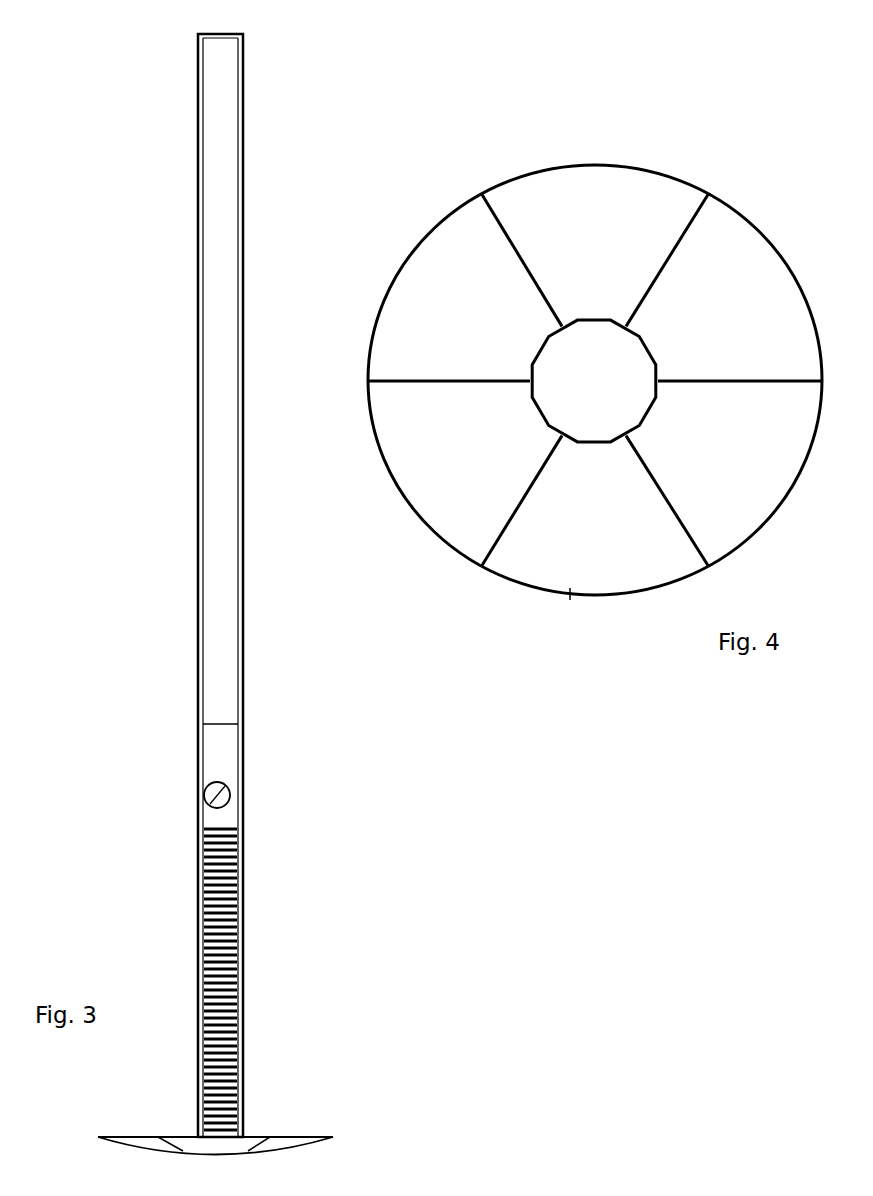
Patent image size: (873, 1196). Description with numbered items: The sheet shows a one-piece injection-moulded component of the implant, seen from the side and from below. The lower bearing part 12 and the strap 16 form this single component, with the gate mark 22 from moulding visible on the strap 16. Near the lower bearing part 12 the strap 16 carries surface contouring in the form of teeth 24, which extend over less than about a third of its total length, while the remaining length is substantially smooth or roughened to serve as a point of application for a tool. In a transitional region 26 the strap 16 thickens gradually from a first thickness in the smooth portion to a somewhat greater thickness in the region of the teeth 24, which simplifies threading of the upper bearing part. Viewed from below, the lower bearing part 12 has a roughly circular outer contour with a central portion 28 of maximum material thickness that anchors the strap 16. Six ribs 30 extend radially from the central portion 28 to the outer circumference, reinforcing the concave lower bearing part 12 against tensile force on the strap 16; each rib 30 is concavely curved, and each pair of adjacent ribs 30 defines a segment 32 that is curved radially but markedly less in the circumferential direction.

In FIG. 3, the lower bearing part 12 is at (352, 1102).
In FIG. 4, the lower bearing part 12 is at (428, 142).
In FIG. 3, the strap 16 is at (225, 683).
In FIG. 3, the gate mark 22 is at (222, 787).
In FIG. 3, the teeth 24 is at (225, 985).
In FIG. 3, the transitional region 26 is at (215, 745).
In FIG. 4, the central portion 28 is at (578, 388).
In FIG. 4, the ribs 30 is at (675, 238).
In FIG. 4, the segment 32 is at (568, 218).